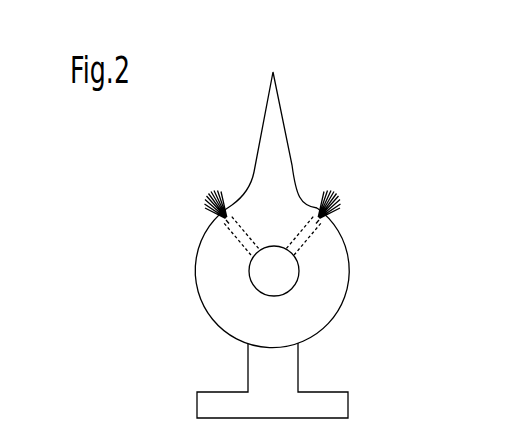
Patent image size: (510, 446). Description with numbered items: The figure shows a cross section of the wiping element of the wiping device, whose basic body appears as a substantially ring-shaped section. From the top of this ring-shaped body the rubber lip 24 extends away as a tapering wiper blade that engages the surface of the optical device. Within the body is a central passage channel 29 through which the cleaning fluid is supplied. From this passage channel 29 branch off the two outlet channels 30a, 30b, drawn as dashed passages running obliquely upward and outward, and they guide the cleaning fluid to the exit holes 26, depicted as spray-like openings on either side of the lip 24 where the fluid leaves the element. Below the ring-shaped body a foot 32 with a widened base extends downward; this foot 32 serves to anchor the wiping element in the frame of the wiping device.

The rubber lip 24 is at (275, 145).
The exit holes 26 is at (336, 215).
The central passage channel 29 is at (287, 283).
The outlet channel 30a is at (313, 254).
The outlet channel 30b is at (233, 254).
The foot 32 is at (258, 371).